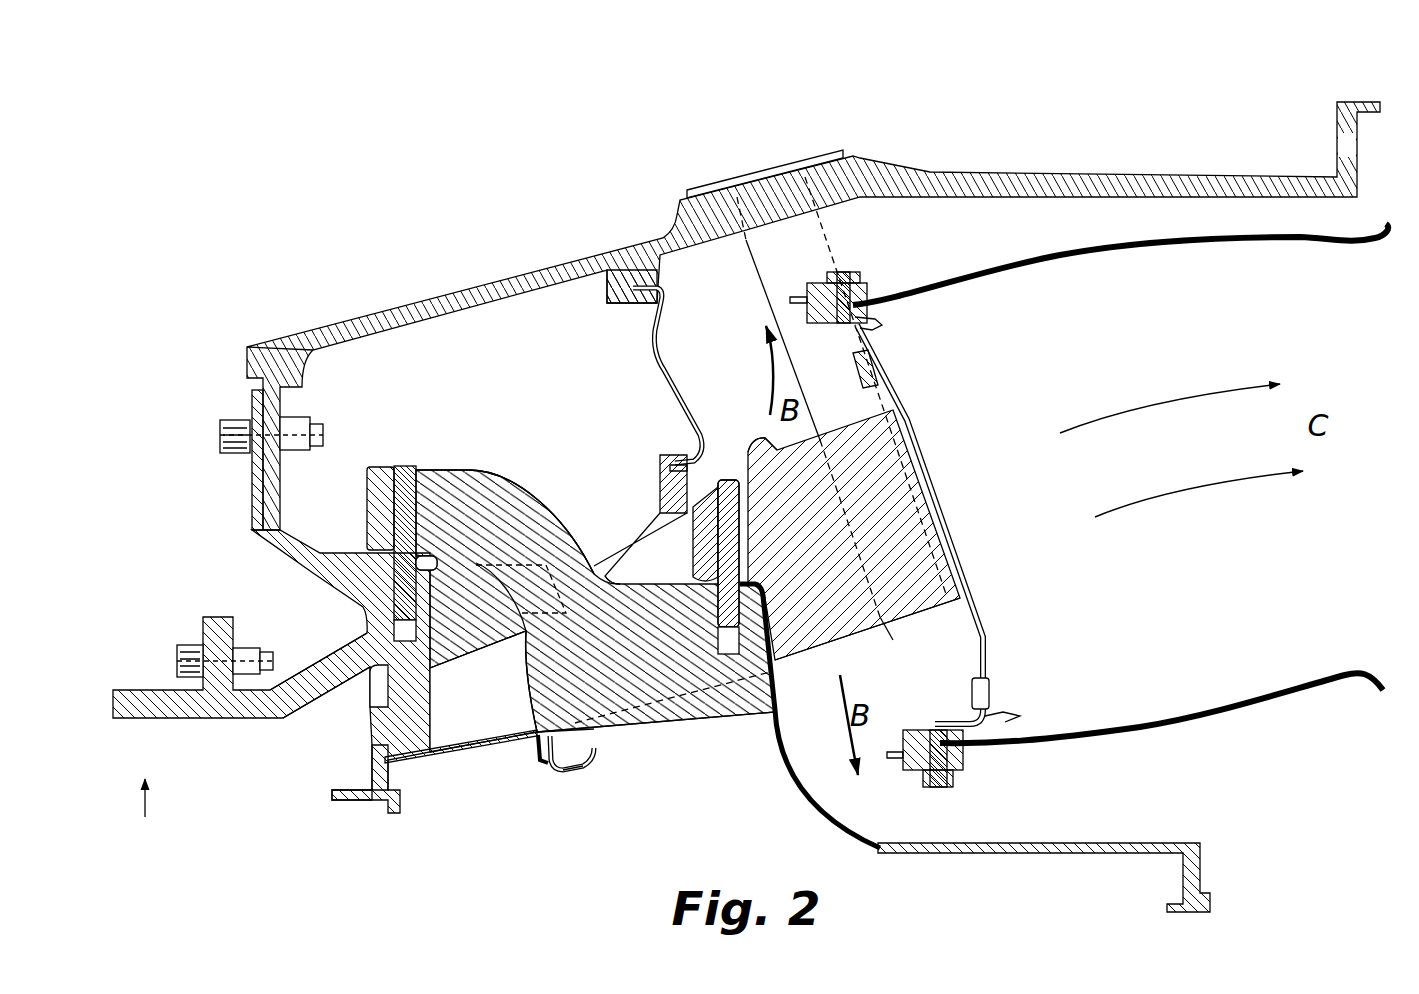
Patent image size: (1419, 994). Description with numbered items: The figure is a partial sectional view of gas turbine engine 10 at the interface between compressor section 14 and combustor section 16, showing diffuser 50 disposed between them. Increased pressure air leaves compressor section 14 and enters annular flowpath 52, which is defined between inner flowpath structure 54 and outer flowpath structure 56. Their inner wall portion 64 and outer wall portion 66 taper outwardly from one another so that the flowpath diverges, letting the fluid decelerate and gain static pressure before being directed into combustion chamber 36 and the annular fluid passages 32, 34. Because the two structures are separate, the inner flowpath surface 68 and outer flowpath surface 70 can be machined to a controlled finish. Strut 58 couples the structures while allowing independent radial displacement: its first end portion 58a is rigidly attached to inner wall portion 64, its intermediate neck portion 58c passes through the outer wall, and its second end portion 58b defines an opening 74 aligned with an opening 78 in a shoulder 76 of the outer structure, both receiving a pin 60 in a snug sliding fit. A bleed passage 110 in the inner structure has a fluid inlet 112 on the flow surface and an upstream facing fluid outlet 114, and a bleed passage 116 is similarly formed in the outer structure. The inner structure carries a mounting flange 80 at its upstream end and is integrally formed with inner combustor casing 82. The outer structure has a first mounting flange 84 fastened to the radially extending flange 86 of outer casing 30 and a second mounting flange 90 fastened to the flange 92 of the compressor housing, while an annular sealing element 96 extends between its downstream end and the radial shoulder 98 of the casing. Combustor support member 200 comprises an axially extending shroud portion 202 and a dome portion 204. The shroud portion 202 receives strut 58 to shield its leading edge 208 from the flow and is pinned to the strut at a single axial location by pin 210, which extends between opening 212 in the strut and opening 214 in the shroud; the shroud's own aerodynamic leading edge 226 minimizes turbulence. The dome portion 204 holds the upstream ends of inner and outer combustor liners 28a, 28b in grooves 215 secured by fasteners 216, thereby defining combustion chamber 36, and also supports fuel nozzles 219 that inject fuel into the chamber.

The gas turbine engine 10 is at (322, 233).
The compressor section 14 is at (142, 816).
The combustor section 16 is at (1224, 770).
The inner combustor liner 28a is at (1335, 688).
The outer combustor liner 28b is at (1350, 238).
The outer casing 30 is at (1027, 170).
The annular fluid passage 32 is at (945, 246).
The annular fluid passage 34 is at (1115, 801).
The combustion chamber 36 is at (1133, 567).
The diffuser 50 is at (553, 800).
The annular flowpath 52 is at (371, 750).
The inner flowpath structure 54 is at (660, 727).
The outer flowpath structure 56 is at (285, 560).
The strut 58 is at (520, 480).
The first end portion 58a is at (537, 738).
The second end portion 58b is at (432, 490).
The intermediate neck portion 58c is at (510, 522).
The pin 60 is at (372, 521).
The inner wall portion 64 is at (448, 762).
The outer wall portion 66 is at (652, 536).
The inner flowpath surface 68 is at (491, 735).
The outer flowpath surface 70 is at (601, 572).
The opening 74 is at (409, 466).
The shoulder 76 is at (433, 603).
The opening 78 is at (416, 565).
The mounting flange 80 is at (355, 801).
The inner combustor casing 82 is at (1047, 858).
The first mounting flange 84 is at (252, 493).
The radially extending flange 86 is at (282, 478).
The second mounting flange 90 is at (290, 689).
The flange 92 is at (150, 690).
The annular sealing element 96 is at (668, 366).
The radial shoulder 98 is at (657, 266).
The bleed passage 110 is at (555, 770).
The fluid inlet 112 is at (565, 745).
The fluid outlet 114 is at (537, 765).
The bleed passage 116 is at (522, 556).
The combustor support member 200 is at (832, 660).
The shroud portion 202 is at (752, 444).
The dome portion 204 is at (815, 264).
The leading edge 208 is at (517, 644).
The pin 210 is at (723, 478).
The opening 212 is at (773, 665).
The opening 214 is at (752, 530).
The groove 215 is at (866, 313).
The fastener 216 is at (832, 274).
The fuel nozzle 219 is at (735, 275).
The leading edge 226 is at (372, 744).